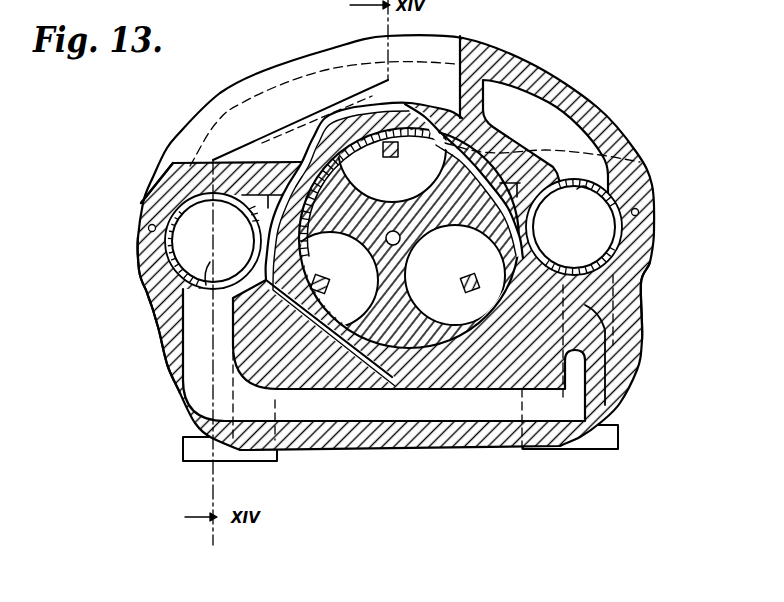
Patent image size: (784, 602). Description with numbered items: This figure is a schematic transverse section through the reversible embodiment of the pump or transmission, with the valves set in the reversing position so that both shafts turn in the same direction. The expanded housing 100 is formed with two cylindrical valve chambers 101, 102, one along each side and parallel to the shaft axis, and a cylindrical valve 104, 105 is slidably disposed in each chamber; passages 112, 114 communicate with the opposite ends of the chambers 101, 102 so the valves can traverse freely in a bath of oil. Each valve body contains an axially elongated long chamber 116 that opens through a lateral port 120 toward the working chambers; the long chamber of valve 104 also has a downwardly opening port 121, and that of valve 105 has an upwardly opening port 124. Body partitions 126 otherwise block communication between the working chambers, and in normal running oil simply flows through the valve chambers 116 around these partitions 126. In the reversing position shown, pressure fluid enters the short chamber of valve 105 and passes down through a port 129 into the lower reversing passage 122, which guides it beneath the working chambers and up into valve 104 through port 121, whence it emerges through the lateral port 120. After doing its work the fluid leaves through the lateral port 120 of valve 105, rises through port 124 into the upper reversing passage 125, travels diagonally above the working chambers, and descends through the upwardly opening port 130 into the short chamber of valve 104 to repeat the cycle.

The housing 100 is at (176, 133).
The valve chamber 101 is at (147, 262).
The valve chamber 102 is at (623, 247).
The cylindrical valve 104 is at (157, 290).
The cylindrical valve 105 is at (600, 256).
The passage 112 is at (148, 229).
The passage 114 is at (640, 212).
The long chamber 116 is at (204, 243).
The lateral port 120 is at (258, 242).
The downwardly opening port 121 is at (205, 283).
The lower reversing passage 122 is at (429, 404).
The upwardly opening port 124 is at (584, 190).
The upper reversing passage 125 is at (562, 116).
The body partition 126 is at (264, 165).
The port 129 is at (612, 297).
The upwardly opening port 130 is at (172, 170).